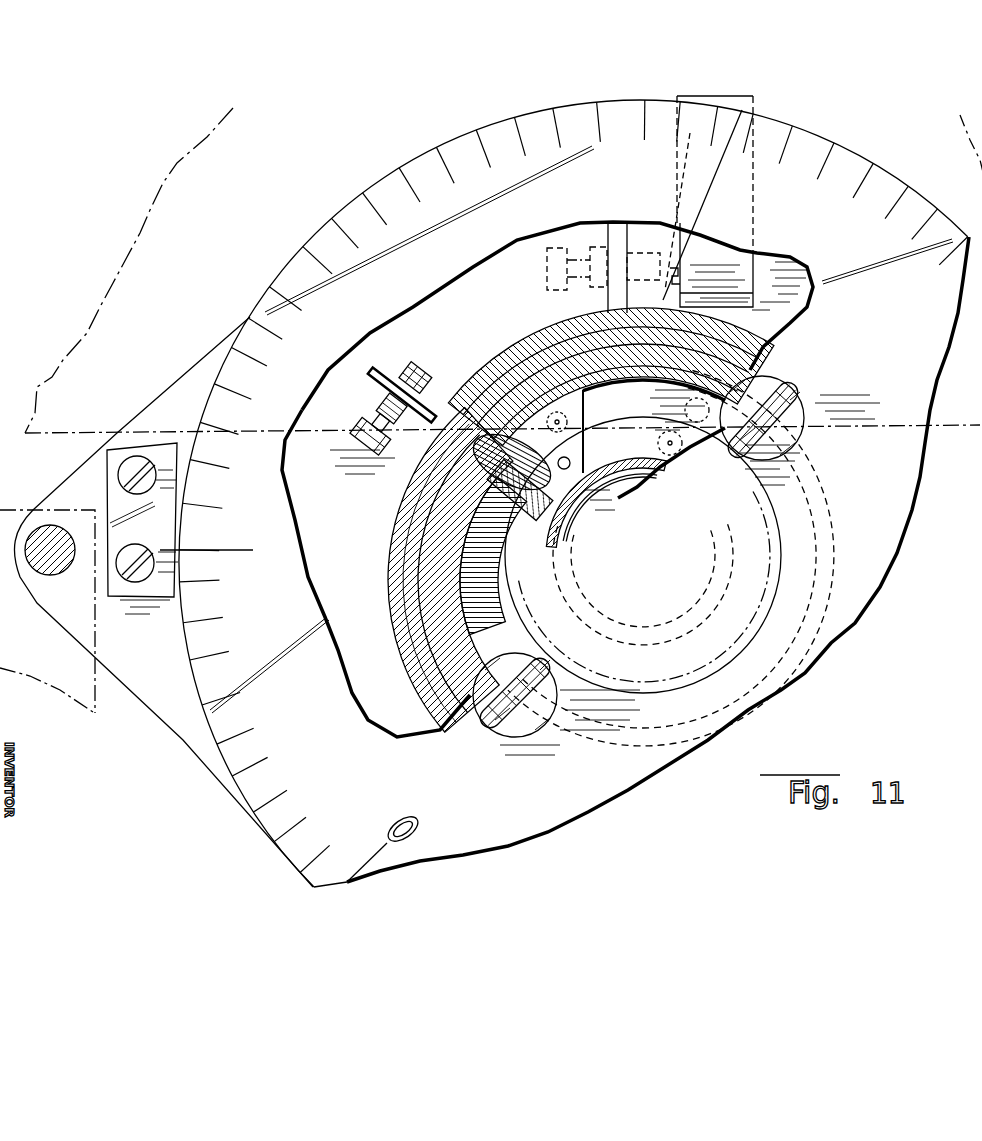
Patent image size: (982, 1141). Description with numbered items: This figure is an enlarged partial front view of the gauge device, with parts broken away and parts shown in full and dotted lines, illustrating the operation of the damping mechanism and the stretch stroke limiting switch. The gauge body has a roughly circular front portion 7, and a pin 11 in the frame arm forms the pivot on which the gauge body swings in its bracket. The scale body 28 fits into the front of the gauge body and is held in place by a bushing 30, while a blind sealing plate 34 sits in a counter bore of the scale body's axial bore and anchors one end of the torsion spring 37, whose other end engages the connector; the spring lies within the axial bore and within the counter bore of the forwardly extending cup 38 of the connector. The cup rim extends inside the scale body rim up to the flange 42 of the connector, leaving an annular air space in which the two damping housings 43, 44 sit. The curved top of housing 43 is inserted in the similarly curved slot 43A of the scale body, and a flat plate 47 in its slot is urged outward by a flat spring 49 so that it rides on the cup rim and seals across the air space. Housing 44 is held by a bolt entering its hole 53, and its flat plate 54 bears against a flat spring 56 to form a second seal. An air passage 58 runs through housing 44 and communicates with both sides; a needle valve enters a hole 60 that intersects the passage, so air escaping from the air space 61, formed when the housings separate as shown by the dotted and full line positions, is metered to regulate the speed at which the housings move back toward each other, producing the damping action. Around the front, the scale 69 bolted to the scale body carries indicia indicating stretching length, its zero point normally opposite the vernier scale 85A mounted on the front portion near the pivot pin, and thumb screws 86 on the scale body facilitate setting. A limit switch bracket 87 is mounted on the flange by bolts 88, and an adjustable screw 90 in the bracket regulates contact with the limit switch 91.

The circular front portion 7 is at (397, 578).
The pin 11 is at (45, 545).
The scale body 28 is at (422, 613).
The bushing 30 is at (715, 355).
The blind sealing plate 34 is at (742, 645).
The torsion spring 37 is at (580, 527).
The cup 38 is at (622, 480).
The flange 42 is at (598, 348).
The housing 43 is at (490, 500).
The curved slot 43A is at (473, 500).
The housing 44 is at (560, 350).
The flat plate 47 is at (540, 533).
The flat spring 49 is at (505, 480).
The hole 53 is at (568, 412).
The flat plate 54 is at (495, 345).
The flat spring 56 is at (528, 375).
The air passage 58 is at (572, 458).
The hole 60 is at (578, 467).
The air space 61 is at (633, 478).
The scale 69 is at (297, 262).
The vernier scale 85A is at (115, 465).
The thumb screws 86 is at (790, 383).
The limit switch bracket 87 is at (427, 410).
The bolts 88 is at (415, 497).
The adjustable screw 90 is at (345, 437).
The limit switch 91 is at (745, 262).